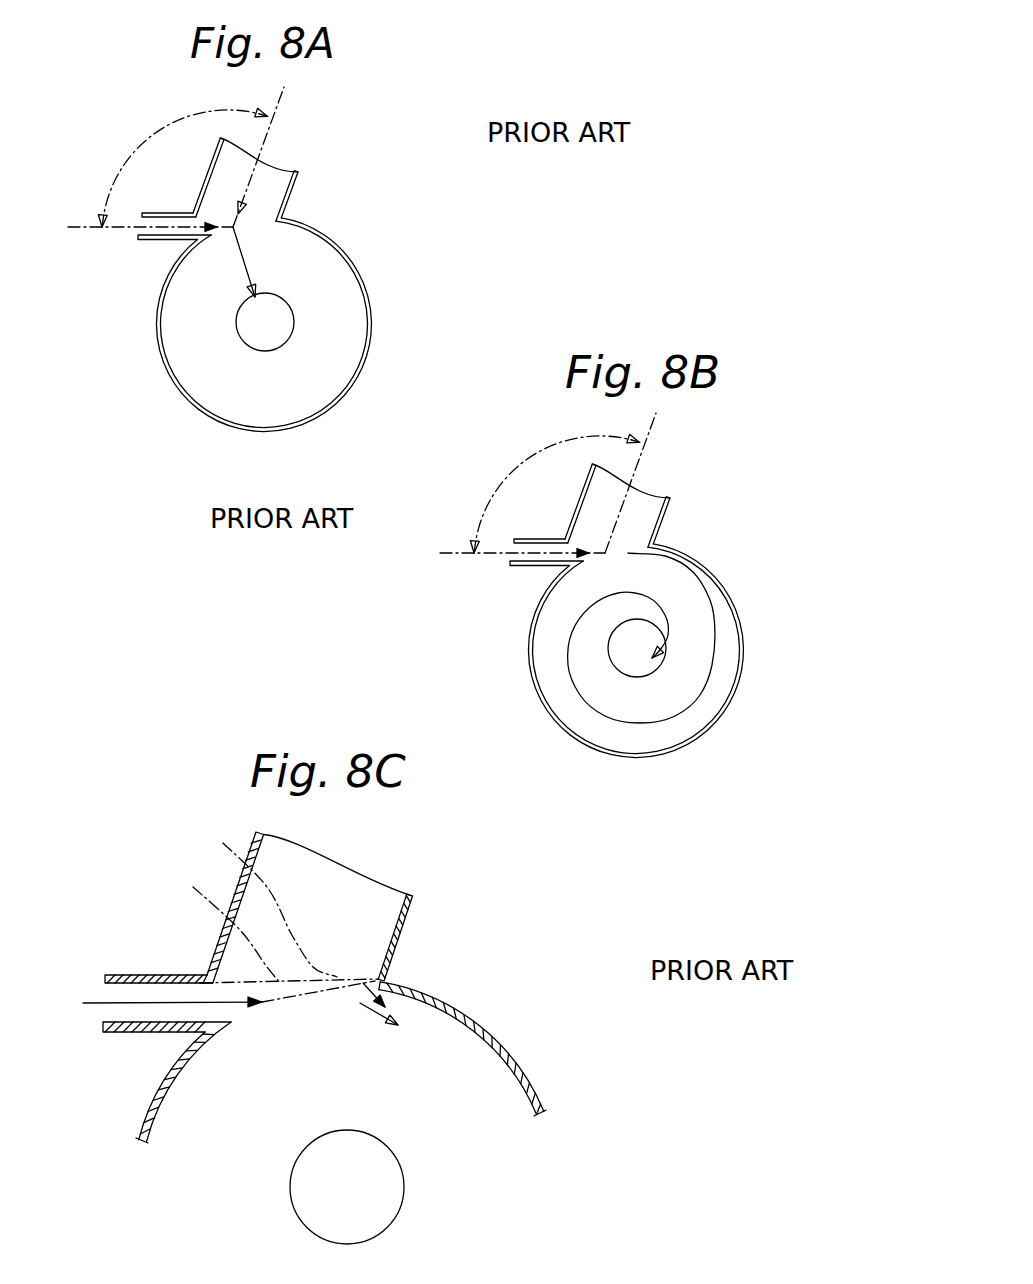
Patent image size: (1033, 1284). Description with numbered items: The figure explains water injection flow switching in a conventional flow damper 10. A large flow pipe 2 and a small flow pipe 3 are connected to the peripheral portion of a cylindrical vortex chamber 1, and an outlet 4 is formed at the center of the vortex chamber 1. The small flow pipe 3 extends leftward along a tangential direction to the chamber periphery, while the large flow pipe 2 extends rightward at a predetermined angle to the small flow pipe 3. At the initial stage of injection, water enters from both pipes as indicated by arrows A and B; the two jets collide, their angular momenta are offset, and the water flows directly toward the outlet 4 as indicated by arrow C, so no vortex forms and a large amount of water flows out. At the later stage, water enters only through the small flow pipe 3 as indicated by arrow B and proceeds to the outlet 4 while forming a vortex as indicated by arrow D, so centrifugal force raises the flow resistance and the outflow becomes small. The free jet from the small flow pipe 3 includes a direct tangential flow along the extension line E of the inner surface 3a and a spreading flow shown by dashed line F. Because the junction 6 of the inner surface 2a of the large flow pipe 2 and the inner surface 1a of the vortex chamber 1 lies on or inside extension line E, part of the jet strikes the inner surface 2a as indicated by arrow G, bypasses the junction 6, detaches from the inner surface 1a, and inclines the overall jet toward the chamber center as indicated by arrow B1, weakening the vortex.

In FIG. 8A, the vortex chamber 1 is at (158, 336).
In FIG. 8B, the vortex chamber 1 is at (528, 683).
In FIG. 8C, the vortex chamber 1 is at (373, 1062).
In FIG. 8C, the inner surface of the vortex chamber 1a is at (413, 1003).
In FIG. 8A, the large flow pipe 2 is at (297, 187).
In FIG. 8B, the large flow pipe 2 is at (670, 500).
In FIG. 8C, the large flow pipe 2 is at (361, 907).
In FIG. 8C, the inner surface of the large flow pipe 2a is at (376, 968).
In FIG. 8A, the small flow pipe 3 is at (163, 243).
In FIG. 8B, the small flow pipe 3 is at (532, 573).
In FIG. 8C, the small flow pipe 3 is at (158, 953).
In FIG. 8C, the inner surface of the small flow pipe 3a is at (155, 982).
In FIG. 8A, the outlet 4 is at (283, 345).
In FIG. 8B, the outlet 4 is at (636, 680).
In FIG. 8C, the outlet 4 is at (395, 1217).
In FIG. 8C, the junction 6 is at (365, 985).
In FIG. 8A, the flow damper 10 is at (378, 162).
In FIG. 8B, the flow damper 10 is at (737, 491).
In FIG. 8C, the flow damper 10 is at (542, 987).
In FIG. 8A, the arrow indicating flow from the large flow pipe A is at (253, 177).
In FIG. 8A, the arrow indicating flow from the small flow pipe B is at (143, 236).
In FIG. 8B, the arrow indicating flow from the small flow pipe B is at (512, 557).
In FIG. 8C, the arrow indicating flow from the small flow pipe B is at (127, 1003).
In FIG. 8C, the arrow indicating inclined overall jet direction B1 is at (377, 1020).
In FIG. 8A, the arrow indicating direct flow toward the outlet C is at (247, 260).
In FIG. 8B, the arrow indicating vortex flow D is at (707, 587).
In FIG. 8C, the extension line of the inner surface E is at (227, 927).
In FIG. 8C, the dashed line indicating spread of the free jet F is at (270, 899).
In FIG. 8C, the arrow indicating collision with the large flow pipe inner surface G is at (390, 978).